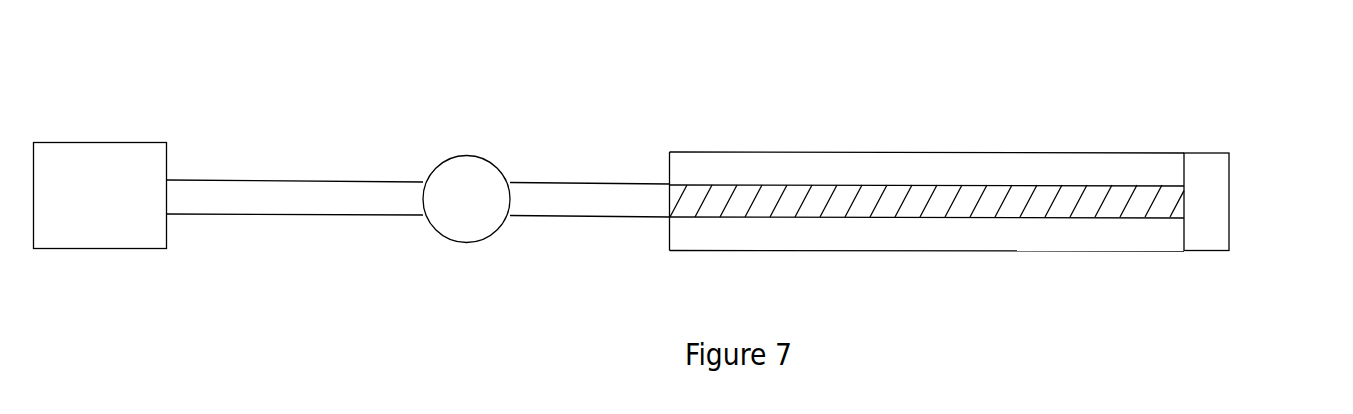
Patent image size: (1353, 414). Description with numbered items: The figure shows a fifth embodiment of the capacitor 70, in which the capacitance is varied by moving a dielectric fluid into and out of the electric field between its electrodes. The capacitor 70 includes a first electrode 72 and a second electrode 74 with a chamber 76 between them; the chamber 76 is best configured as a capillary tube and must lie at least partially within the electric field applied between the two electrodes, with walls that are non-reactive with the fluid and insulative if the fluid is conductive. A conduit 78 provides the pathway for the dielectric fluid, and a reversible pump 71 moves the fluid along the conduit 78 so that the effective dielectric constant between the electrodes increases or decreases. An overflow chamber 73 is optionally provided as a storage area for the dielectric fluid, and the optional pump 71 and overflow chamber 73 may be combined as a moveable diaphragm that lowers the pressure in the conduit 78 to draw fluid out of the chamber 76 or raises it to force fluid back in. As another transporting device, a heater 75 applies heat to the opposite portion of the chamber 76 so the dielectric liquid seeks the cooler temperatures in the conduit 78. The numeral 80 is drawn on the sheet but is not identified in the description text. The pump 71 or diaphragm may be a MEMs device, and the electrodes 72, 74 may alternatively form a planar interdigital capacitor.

The capacitor 70 is at (903, 32).
The reversible pump 71 is at (482, 214).
The first electrode 72 is at (973, 152).
The overflow chamber 73 is at (113, 213).
The second electrode 74 is at (982, 249).
The heater 75 is at (1208, 200).
The chamber 76 is at (927, 150).
The conduit 78 is at (418, 256).
The tissue 80 is at (1000, 370).